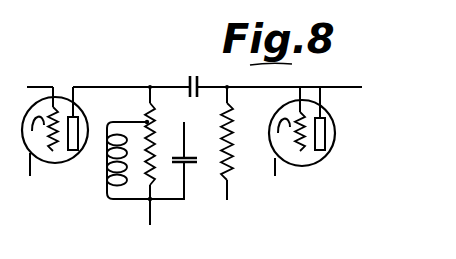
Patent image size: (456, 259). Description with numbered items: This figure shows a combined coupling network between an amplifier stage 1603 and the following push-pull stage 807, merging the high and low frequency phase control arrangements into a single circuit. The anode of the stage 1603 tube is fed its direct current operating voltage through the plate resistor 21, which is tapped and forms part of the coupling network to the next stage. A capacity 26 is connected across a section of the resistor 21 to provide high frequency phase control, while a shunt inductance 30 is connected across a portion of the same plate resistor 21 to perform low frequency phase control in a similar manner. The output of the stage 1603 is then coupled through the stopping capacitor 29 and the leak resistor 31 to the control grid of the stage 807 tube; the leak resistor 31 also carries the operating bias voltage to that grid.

The stage 1603 is at (81, 79).
The stage 807 is at (334, 84).
The stopping capacitor 29 is at (189, 79).
The plate resistor 21 is at (143, 159).
The shunt inductance 30 is at (102, 165).
The capacity 26 is at (189, 167).
The leak resistor 31 is at (229, 160).